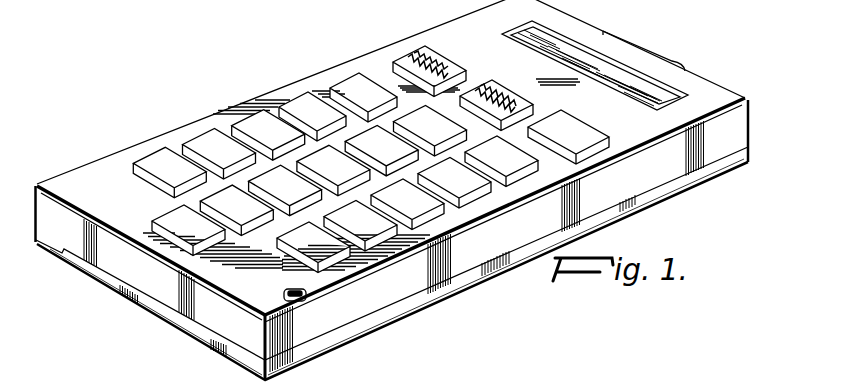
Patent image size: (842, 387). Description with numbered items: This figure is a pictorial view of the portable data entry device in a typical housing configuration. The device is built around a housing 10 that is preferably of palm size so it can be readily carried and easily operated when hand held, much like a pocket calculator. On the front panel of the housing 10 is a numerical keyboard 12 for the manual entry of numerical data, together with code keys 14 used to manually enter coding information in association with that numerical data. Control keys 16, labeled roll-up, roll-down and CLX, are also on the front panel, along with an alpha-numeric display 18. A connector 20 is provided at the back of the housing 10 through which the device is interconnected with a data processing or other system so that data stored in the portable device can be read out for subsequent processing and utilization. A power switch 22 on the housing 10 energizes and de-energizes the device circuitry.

The housing 10 is at (353, 67).
The numerical keyboard 12 is at (170, 127).
The code keys 14 is at (298, 76).
The control keys 16 is at (391, 36).
The alpha-numeric display 18 is at (670, 59).
The connector 20 is at (643, 88).
The power switch 22 is at (298, 302).